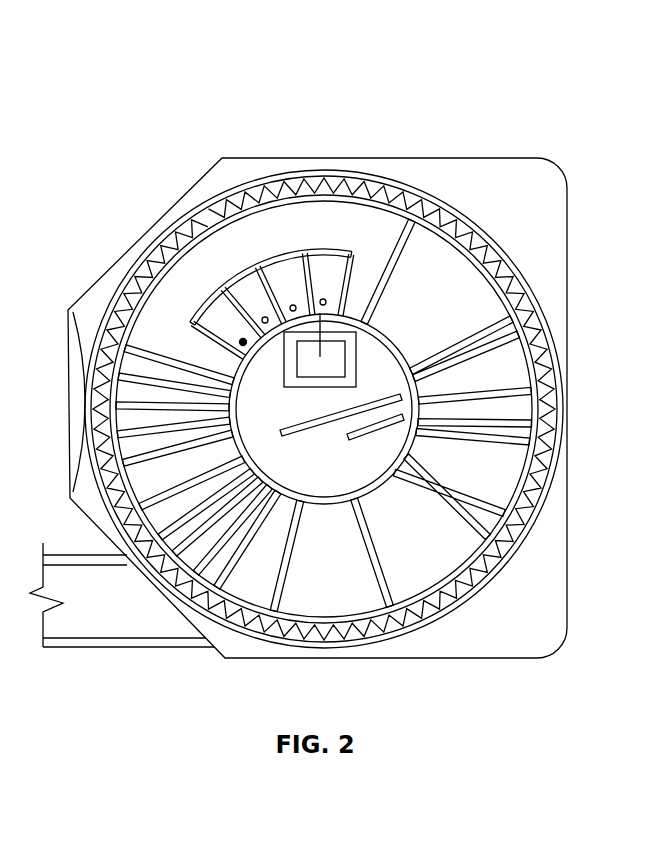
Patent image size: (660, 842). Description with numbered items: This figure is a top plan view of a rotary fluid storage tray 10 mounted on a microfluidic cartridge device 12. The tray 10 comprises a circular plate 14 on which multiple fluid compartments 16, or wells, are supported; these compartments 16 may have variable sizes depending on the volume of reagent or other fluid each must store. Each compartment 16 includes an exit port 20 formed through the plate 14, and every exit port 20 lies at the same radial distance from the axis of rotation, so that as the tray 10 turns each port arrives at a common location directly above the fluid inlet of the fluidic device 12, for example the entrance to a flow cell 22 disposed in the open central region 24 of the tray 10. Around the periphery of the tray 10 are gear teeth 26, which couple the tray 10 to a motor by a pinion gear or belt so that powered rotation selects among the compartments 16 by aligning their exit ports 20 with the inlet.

The rotary fluid storage tray 10 is at (458, 207).
The microfluidic cartridge device 12 is at (568, 549).
The plate 14 is at (443, 306).
The fluid compartments 16 is at (327, 270).
The exit port 20 is at (243, 342).
The flow cell 22 is at (290, 300).
The open central region 24 is at (243, 477).
The peripheral gear teeth 26 is at (259, 493).